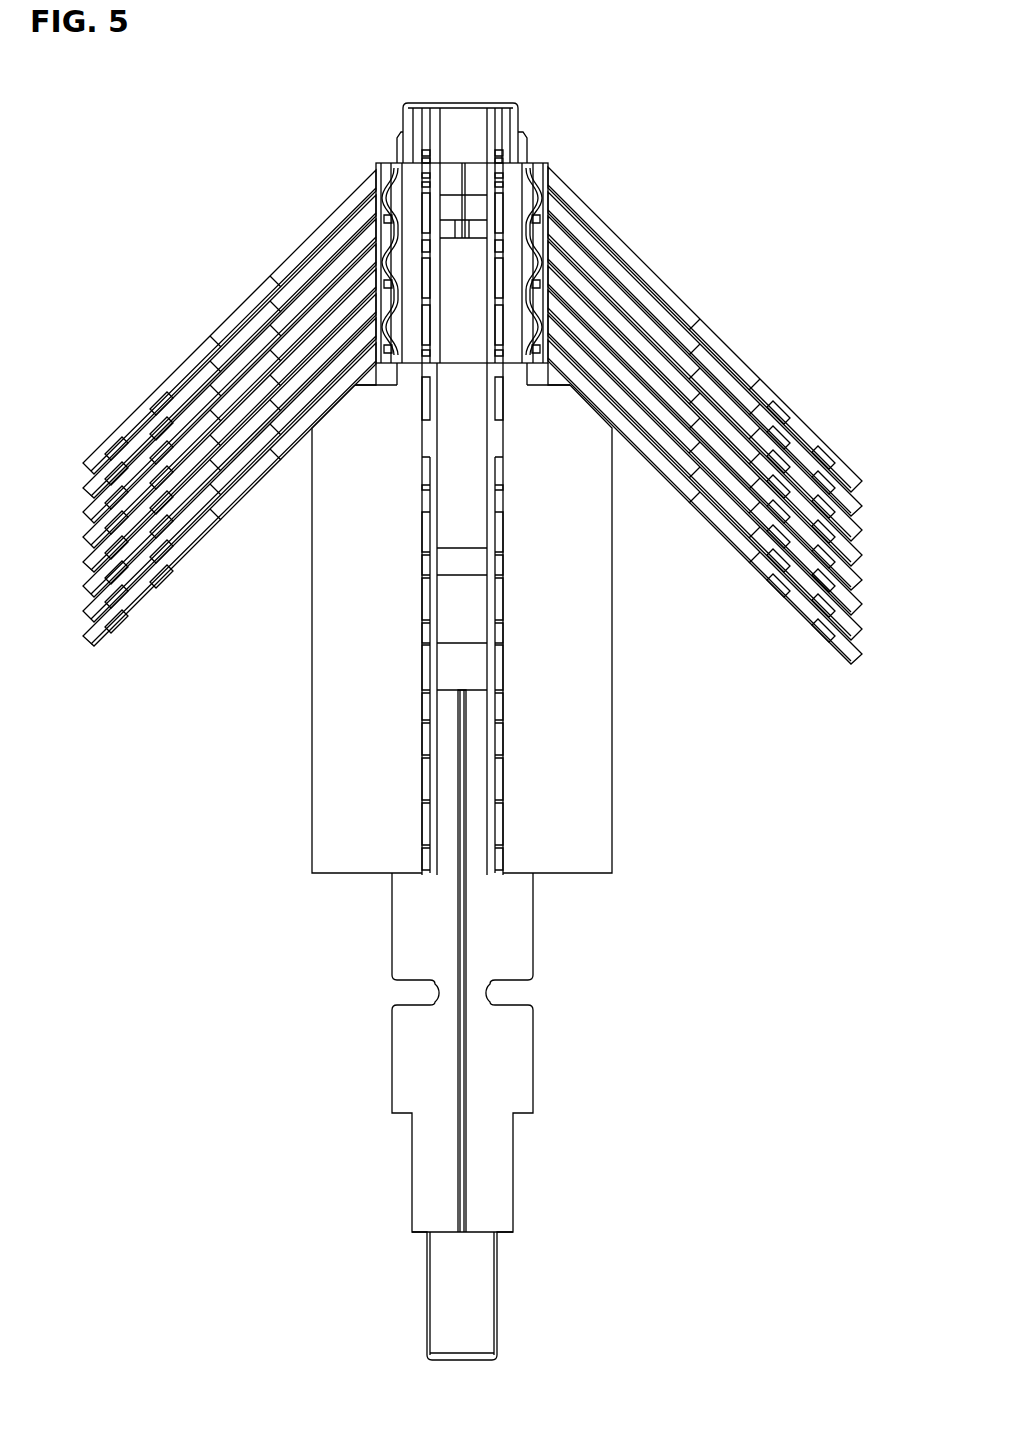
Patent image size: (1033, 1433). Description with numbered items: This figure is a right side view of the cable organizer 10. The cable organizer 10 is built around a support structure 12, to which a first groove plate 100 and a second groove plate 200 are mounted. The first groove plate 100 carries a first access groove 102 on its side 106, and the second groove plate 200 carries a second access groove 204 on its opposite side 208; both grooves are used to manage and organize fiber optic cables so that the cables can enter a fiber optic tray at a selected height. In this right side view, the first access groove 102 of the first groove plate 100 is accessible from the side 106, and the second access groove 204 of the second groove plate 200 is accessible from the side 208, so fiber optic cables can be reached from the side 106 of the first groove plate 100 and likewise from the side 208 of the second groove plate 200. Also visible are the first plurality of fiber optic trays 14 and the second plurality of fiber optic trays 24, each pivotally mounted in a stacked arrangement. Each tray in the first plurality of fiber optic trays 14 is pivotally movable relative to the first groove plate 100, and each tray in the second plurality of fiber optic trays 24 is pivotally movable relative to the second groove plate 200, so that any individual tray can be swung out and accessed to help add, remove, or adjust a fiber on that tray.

The cable organizer 10 is at (742, 98).
The support structure 12 is at (535, 1055).
The first plurality of fiber optic trays 14 is at (130, 413).
The second plurality of fiber optic trays 24 is at (806, 436).
The first groove plate 100 is at (423, 317).
The first access groove 102 is at (400, 203).
The side 106 is at (400, 261).
The second groove plate 200 is at (527, 337).
The second access groove 204 is at (546, 190).
The opposite side 208 is at (523, 248).